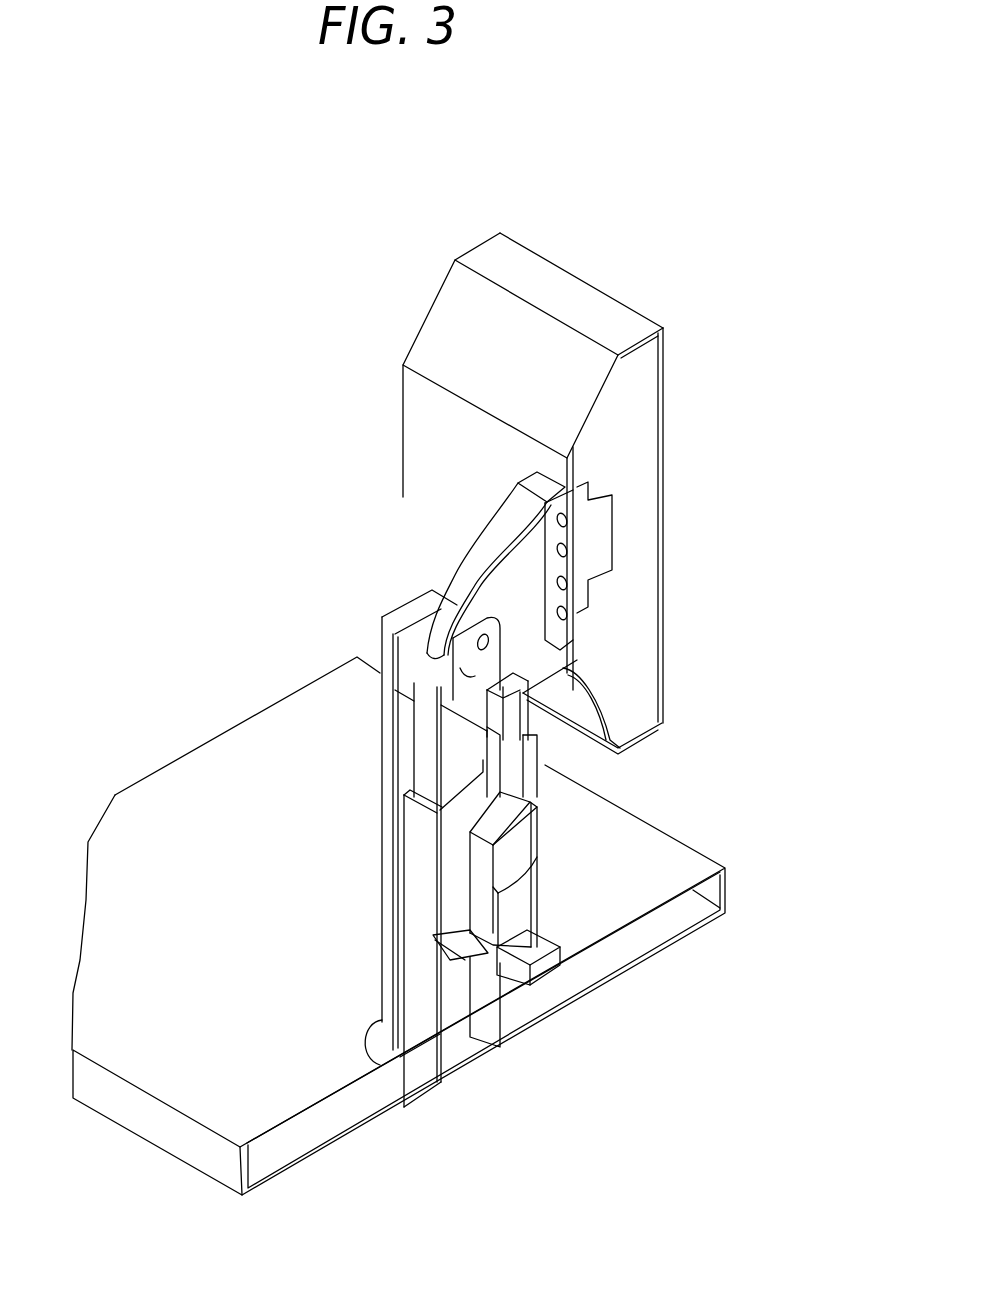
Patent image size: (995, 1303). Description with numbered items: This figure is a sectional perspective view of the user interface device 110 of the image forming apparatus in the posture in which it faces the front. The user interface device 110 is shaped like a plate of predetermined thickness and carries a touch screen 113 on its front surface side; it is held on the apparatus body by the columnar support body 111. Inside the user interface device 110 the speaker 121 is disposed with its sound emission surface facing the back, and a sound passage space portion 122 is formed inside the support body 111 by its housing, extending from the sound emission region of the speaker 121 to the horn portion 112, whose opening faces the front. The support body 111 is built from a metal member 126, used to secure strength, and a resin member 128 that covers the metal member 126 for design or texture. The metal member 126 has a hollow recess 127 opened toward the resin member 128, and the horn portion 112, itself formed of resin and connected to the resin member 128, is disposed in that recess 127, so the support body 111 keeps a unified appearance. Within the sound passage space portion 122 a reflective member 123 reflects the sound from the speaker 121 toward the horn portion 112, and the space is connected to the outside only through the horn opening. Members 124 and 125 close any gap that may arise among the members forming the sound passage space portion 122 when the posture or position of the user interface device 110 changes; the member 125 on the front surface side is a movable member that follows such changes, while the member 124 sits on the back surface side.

The user interface device 110 is at (640, 318).
The support body 111 is at (383, 973).
The horn portion 112 is at (520, 912).
The touch screen 113 is at (660, 468).
The speaker 121 is at (577, 572).
The sound passage space portion 122 is at (453, 838).
The reflective member 123 is at (452, 958).
The member 124 is at (440, 660).
The member 125 is at (525, 718).
The metal member 126 is at (535, 802).
The recess 127 is at (508, 935).
The resin member 128 is at (537, 815).